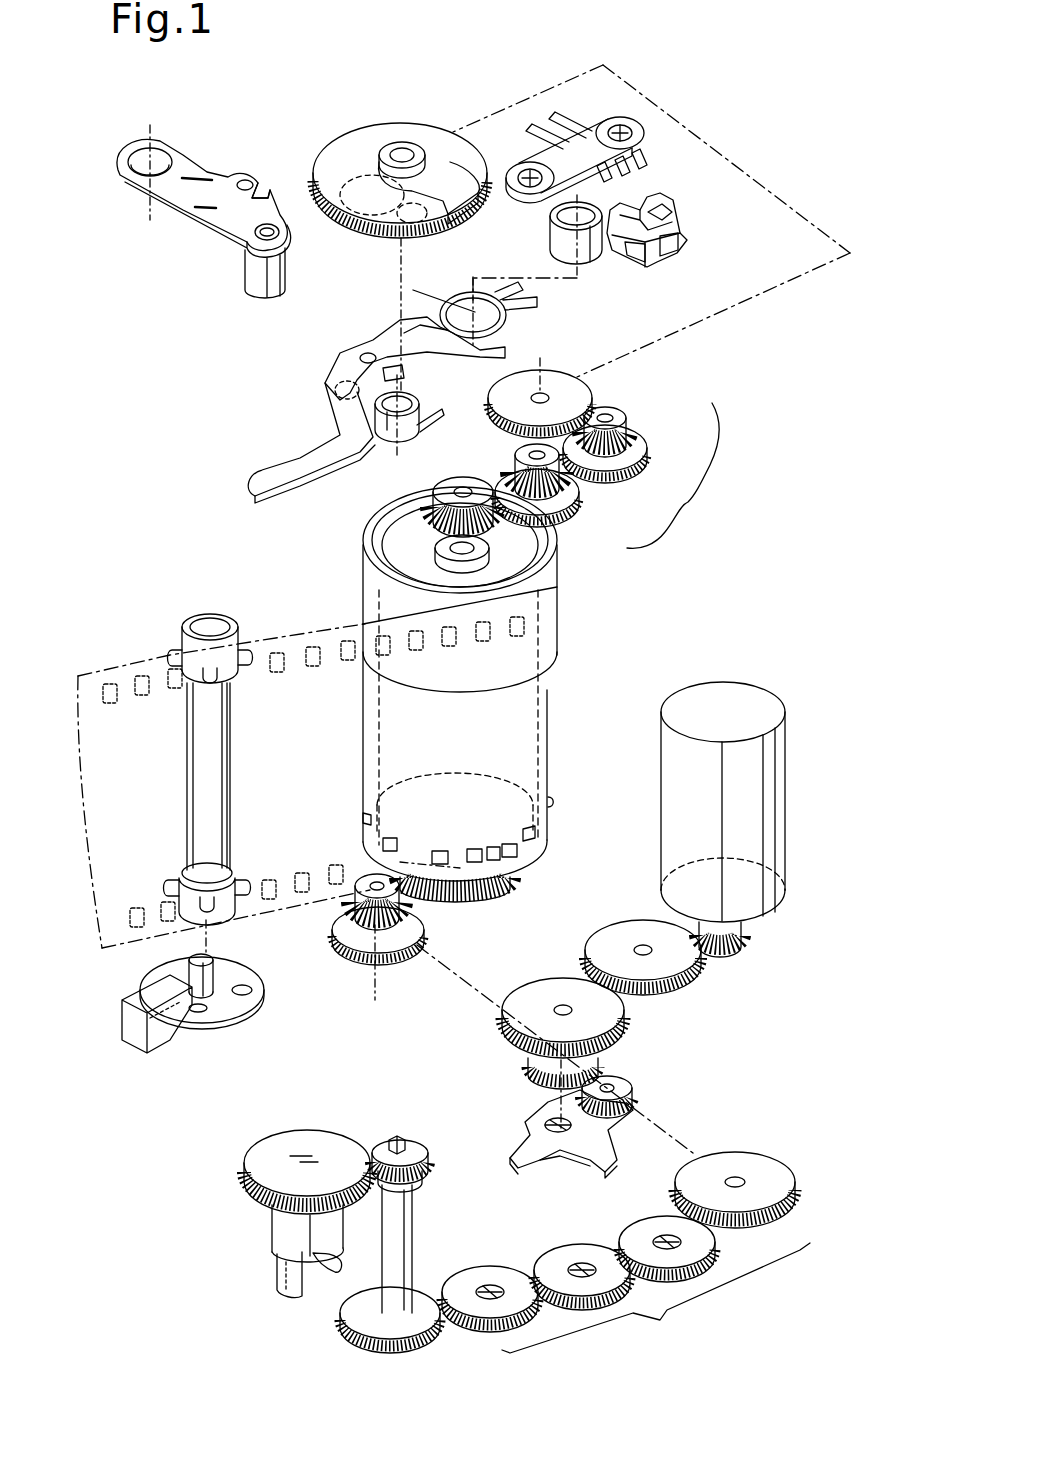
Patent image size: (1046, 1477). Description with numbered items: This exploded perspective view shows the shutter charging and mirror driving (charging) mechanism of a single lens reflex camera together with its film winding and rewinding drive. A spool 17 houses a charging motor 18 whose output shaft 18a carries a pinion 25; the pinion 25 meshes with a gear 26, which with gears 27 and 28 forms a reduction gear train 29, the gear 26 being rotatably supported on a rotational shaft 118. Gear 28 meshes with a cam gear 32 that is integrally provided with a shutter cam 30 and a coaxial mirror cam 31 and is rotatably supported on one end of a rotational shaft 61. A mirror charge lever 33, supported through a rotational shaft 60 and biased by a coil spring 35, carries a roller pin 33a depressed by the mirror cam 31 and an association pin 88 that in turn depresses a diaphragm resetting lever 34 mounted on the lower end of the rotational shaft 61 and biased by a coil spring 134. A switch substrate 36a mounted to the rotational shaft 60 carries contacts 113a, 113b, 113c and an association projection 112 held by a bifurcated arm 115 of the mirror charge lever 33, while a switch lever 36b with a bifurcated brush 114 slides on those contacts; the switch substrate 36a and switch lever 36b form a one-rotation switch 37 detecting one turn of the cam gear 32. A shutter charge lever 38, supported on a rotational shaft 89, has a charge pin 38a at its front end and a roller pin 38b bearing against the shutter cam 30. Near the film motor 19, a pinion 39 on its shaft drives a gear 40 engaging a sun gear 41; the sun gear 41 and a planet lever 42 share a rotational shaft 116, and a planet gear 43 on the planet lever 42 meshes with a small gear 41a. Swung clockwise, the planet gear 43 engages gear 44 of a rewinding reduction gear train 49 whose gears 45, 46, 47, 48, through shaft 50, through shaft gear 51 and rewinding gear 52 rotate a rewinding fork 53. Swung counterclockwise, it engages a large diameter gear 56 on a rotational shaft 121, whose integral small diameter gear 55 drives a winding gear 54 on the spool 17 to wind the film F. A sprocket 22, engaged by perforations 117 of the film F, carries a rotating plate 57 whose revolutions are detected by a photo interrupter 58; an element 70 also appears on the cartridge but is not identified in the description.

The spool 17 is at (552, 588).
The charging motor 18 is at (398, 542).
The output shaft 18a is at (450, 545).
The film motor 19 is at (786, 772).
The sprocket 22 is at (184, 622).
The pinion 25 is at (464, 482).
The gear 26 is at (578, 510).
The gear 27 is at (646, 455).
The gear 28 is at (592, 398).
The reduction gear train 29 is at (677, 475).
The shutter cam 30 is at (400, 236).
The mirror cam 31 is at (372, 236).
The cam gear 32 is at (345, 224).
The mirror driving (charging) lever 33 is at (303, 457).
The roller pin 33a is at (404, 372).
The diaphragm resetting lever 34 is at (342, 358).
The coil spring 35 is at (454, 300).
The switch substrate 36a is at (672, 228).
The switch lever 36b is at (636, 133).
The one-rotation switch 37 is at (608, 128).
The shutter charge lever 38 is at (163, 140).
The charge pin 38a is at (246, 268).
The roller pin 38b is at (265, 192).
The pinion 39 is at (744, 940).
The gear 40 is at (692, 976).
The sun gear 41 is at (616, 1034).
The small gear 41a is at (598, 1062).
The planet lever 42 is at (527, 1148).
The planet gear 43 is at (632, 1088).
The gear 44 is at (758, 1156).
The gear 45 is at (650, 1226).
The gear 46 is at (566, 1252).
The gear 47 is at (492, 1278).
The gear 48 is at (422, 1292).
The rewinding reduction gear train 49 is at (656, 1298).
The through shaft 50 is at (414, 1210).
The through shaft gear 51 is at (430, 1168).
The rewinding gear 52 is at (246, 1182).
The rewinding fork 53 is at (276, 1272).
The winding gear 54 is at (522, 878).
The small diameter gear 55 is at (400, 916).
The large diameter gear 56 is at (350, 950).
The rotating plate 57 is at (250, 1010).
The photo interrupter 58 is at (122, 1026).
The rotational shaft 60 is at (520, 350).
The rotational shaft 61 is at (397, 312).
The projection 70 is at (556, 800).
The association pin 88 is at (335, 396).
The rotational shaft 89 is at (146, 207).
The association projection 112 is at (596, 262).
The contact 113a is at (670, 250).
The contact 113b is at (648, 260).
The contact 113c is at (668, 210).
The bifurcated brush 114 is at (650, 172).
The bifurcated arm 115 is at (530, 310).
The rotational shaft 116 is at (552, 1100).
The perforations 117 is at (280, 645).
The rotational shaft 118 is at (548, 364).
The rotational shaft 121 is at (380, 968).
The coil spring 134 is at (398, 444).
The film F is at (97, 668).